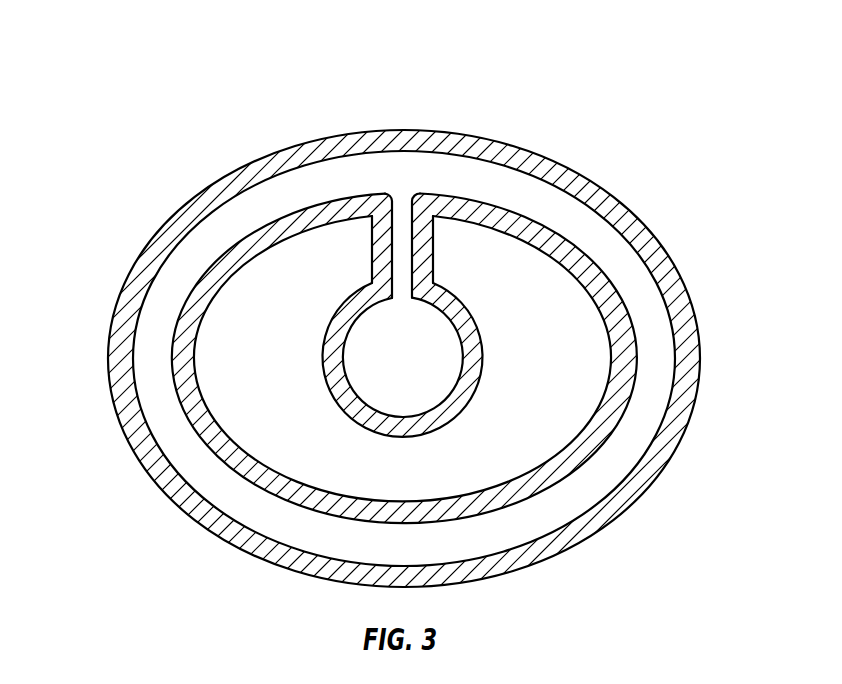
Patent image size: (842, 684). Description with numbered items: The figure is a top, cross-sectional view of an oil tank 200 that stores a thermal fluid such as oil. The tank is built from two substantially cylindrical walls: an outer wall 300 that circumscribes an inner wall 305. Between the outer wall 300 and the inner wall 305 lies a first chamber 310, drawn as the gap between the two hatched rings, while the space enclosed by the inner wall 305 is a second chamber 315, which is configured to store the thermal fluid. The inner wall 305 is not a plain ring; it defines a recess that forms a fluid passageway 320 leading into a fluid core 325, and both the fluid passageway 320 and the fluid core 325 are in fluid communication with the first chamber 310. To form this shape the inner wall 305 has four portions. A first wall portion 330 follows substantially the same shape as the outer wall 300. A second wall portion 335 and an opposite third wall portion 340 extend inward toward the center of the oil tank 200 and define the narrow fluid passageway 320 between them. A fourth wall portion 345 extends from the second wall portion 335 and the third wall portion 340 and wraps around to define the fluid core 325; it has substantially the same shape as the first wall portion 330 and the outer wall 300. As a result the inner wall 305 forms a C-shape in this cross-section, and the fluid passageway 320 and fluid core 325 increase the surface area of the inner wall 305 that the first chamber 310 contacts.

The oil tank 200 is at (662, 92).
The outer wall 300 is at (113, 312).
The inner wall 305 is at (582, 467).
The first chamber 310 is at (178, 272).
The second chamber 315 is at (340, 465).
The fluid passageway 320 is at (402, 243).
The fluid core 325 is at (412, 383).
The first wall portion 330 is at (507, 493).
The second wall portion 335 is at (378, 258).
The third wall portion 340 is at (425, 258).
The fourth wall portion 345 is at (333, 365).